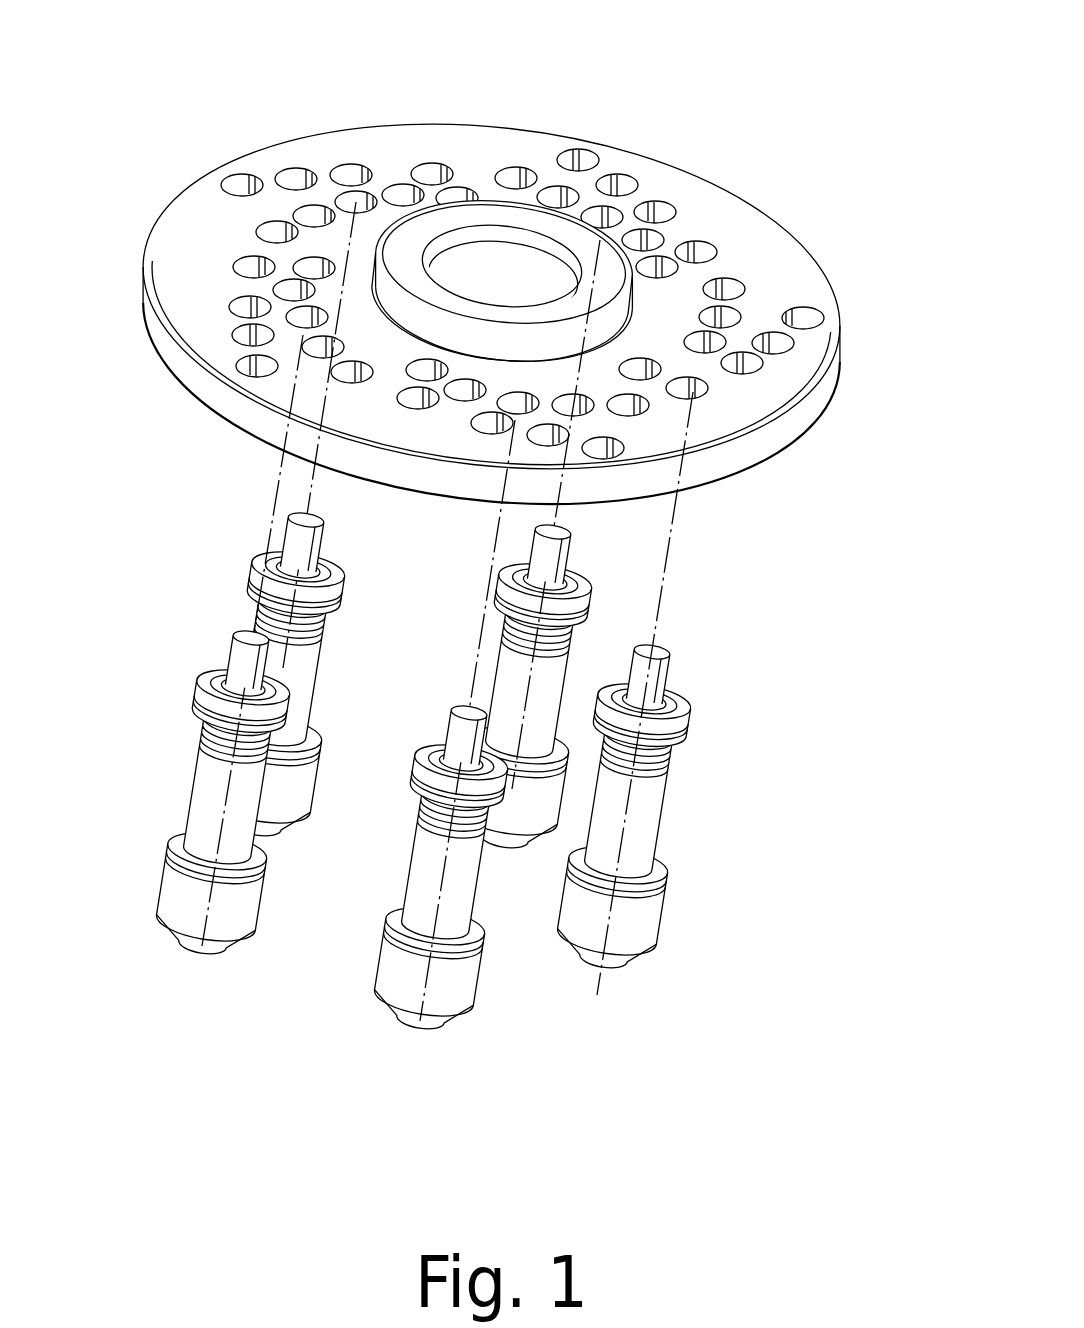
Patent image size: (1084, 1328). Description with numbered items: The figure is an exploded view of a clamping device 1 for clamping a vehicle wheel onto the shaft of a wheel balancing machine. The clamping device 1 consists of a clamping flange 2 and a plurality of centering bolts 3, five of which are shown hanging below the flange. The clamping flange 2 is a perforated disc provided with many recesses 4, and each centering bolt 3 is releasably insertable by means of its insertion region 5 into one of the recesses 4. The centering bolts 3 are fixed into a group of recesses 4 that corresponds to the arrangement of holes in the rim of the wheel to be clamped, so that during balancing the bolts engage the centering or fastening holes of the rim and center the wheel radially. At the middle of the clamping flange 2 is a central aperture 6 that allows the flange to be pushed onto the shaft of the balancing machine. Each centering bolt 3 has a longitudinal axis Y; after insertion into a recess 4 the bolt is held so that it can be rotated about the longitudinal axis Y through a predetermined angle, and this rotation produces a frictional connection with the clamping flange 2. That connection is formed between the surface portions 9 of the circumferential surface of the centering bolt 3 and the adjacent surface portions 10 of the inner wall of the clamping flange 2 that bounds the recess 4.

The clamping device 1 is at (518, 525).
The clamping flange 2 is at (518, 269).
The centering bolt 3 is at (552, 668).
The recess 4 is at (810, 441).
The insertion region 5 is at (319, 538).
The central aperture 6 is at (506, 258).
The surface portions 9 is at (580, 550).
The surface portions 10 is at (752, 362).
The longitudinal axis Y is at (603, 990).